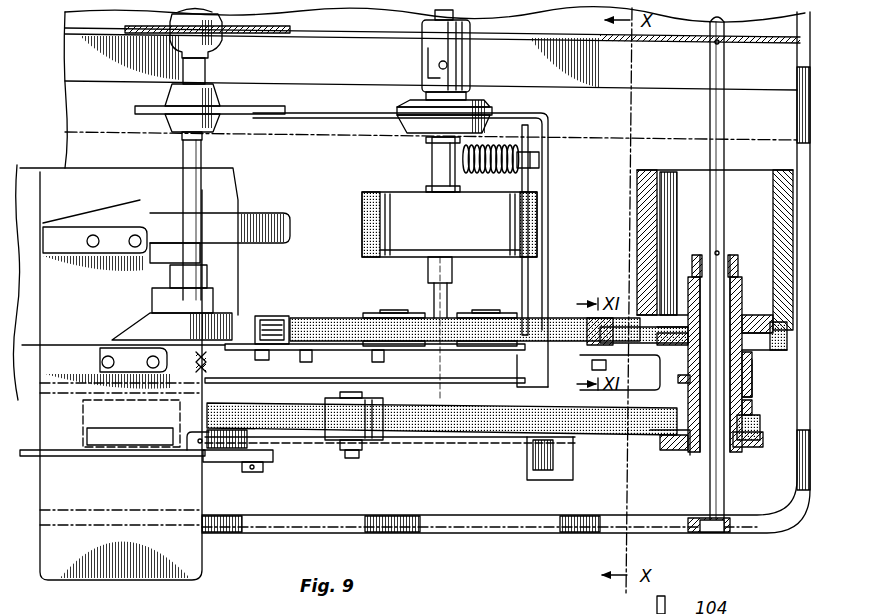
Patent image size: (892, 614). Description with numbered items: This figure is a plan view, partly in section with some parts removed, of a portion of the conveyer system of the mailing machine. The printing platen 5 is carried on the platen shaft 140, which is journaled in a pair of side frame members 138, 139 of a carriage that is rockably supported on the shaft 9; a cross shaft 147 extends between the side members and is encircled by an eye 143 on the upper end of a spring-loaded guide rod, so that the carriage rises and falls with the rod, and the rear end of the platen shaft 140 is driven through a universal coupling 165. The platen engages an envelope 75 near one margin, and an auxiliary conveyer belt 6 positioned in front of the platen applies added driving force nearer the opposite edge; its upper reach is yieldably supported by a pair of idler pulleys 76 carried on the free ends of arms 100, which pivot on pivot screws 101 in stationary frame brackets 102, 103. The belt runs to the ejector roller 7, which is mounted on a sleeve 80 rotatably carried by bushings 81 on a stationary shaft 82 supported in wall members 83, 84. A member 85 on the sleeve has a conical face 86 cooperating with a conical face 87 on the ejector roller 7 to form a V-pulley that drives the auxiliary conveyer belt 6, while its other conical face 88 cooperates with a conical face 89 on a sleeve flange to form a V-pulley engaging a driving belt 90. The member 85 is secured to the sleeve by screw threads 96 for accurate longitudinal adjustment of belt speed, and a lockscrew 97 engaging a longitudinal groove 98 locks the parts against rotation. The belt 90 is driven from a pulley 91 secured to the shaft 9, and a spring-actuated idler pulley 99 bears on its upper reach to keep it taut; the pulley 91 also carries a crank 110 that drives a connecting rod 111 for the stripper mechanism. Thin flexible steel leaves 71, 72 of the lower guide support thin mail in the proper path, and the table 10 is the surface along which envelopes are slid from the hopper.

The printing platen 5 is at (362, 234).
The auxiliary conveyer belt 6 is at (352, 348).
The ejector roller 7 is at (800, 232).
The shaft 9 is at (202, 160).
The table 10 is at (190, 556).
The flexible steel leaf 71 is at (258, 322).
The flexible steel leaf 72 is at (284, 215).
The envelope 75 is at (238, 195).
The idler pulleys 76 is at (404, 316).
The sleeve 80 is at (737, 287).
The bushings 81 is at (742, 447).
The shaft 82 is at (708, 483).
The wall member 83 is at (728, 518).
The wall member 84 is at (760, 40).
The member 85 is at (750, 393).
The conical face 86 is at (784, 350).
The conical face 87 is at (790, 330).
The conical face 88 is at (762, 418).
The conical face 89 is at (762, 437).
The driving belt 90 is at (610, 432).
The pulley 91 is at (280, 440).
The screw threads 96 is at (753, 363).
The lockscrew 97 is at (684, 394).
The longitudinal groove 98 is at (682, 450).
The idler pulley 99 is at (352, 428).
The arms 100 is at (342, 328).
The pivot screws 101 is at (290, 318).
The frame bracket 102 is at (263, 352).
The frame bracket 103 is at (620, 352).
The crank 110 is at (256, 472).
The plate 111 is at (226, 462).
The side frame member 138 is at (517, 388).
The side frame member 139 is at (350, 115).
The platen shaft 140 is at (432, 160).
The eye 143 is at (540, 160).
The cross shaft 147 is at (530, 186).
The universal coupling 165 is at (472, 62).